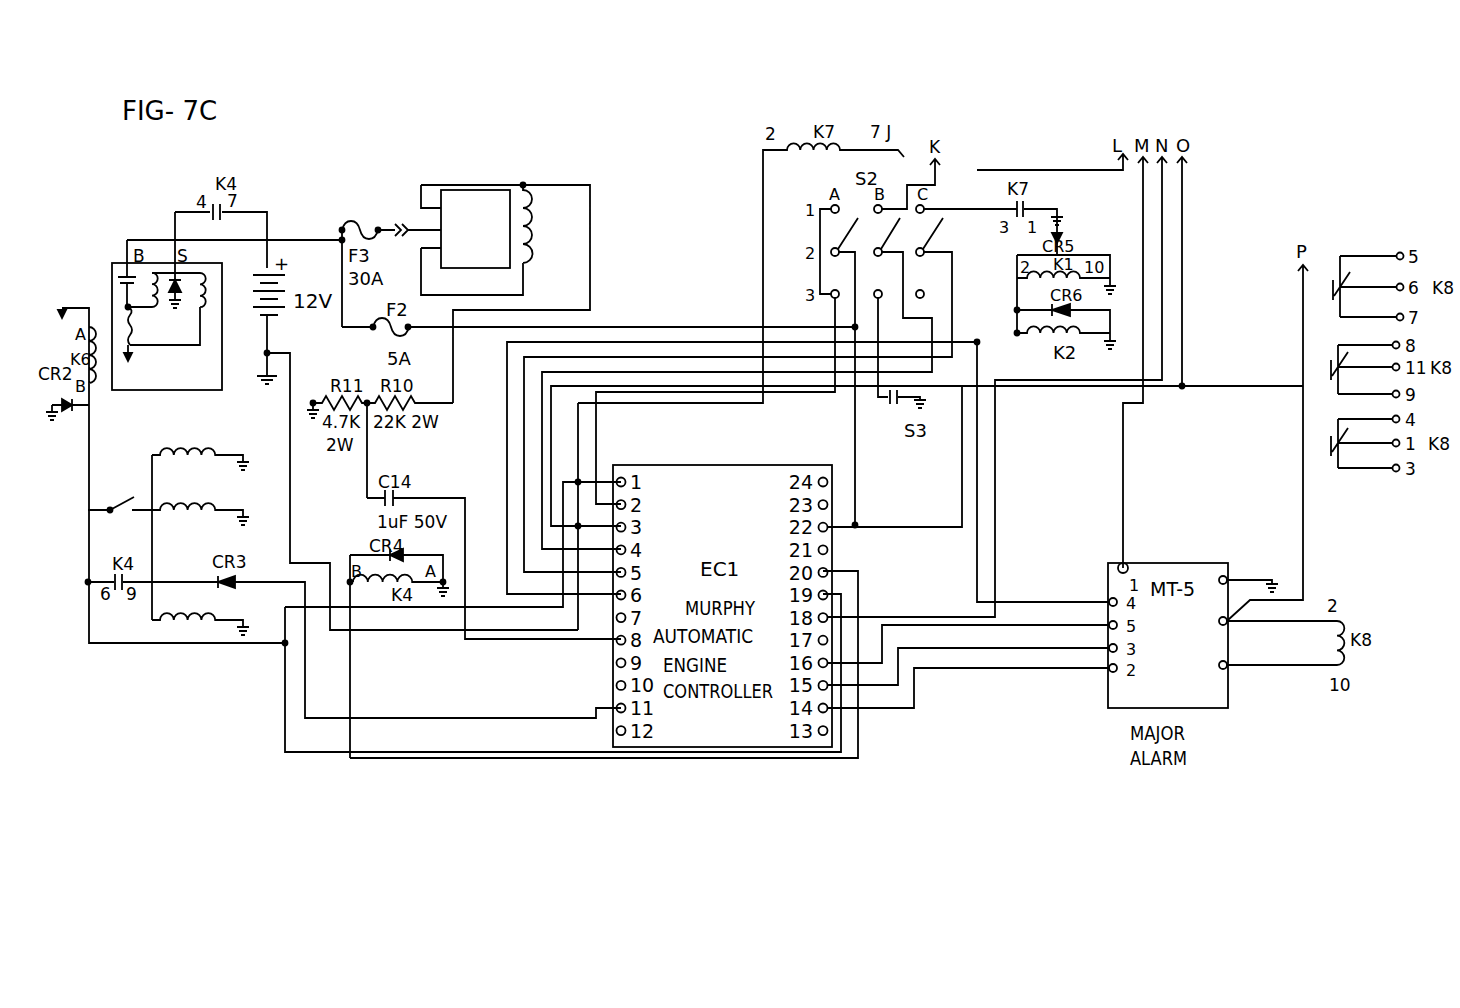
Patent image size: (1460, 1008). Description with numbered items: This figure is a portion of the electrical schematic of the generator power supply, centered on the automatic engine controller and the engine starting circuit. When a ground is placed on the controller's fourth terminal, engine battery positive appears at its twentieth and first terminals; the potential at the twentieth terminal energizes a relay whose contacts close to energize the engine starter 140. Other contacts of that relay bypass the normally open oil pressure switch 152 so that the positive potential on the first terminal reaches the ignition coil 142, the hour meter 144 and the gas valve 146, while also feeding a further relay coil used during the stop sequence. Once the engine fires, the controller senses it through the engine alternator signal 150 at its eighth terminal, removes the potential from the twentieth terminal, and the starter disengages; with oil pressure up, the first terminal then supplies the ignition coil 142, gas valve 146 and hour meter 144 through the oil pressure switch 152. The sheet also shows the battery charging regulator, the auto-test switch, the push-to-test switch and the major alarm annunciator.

The engine starter 140 is at (112, 290).
The engine alternator signal 150 is at (590, 296).
The oil pressure switch 152 is at (112, 503).
The gas valve 146 is at (193, 458).
The ignition coil 142 is at (180, 513).
The hour meter 144 is at (178, 625).